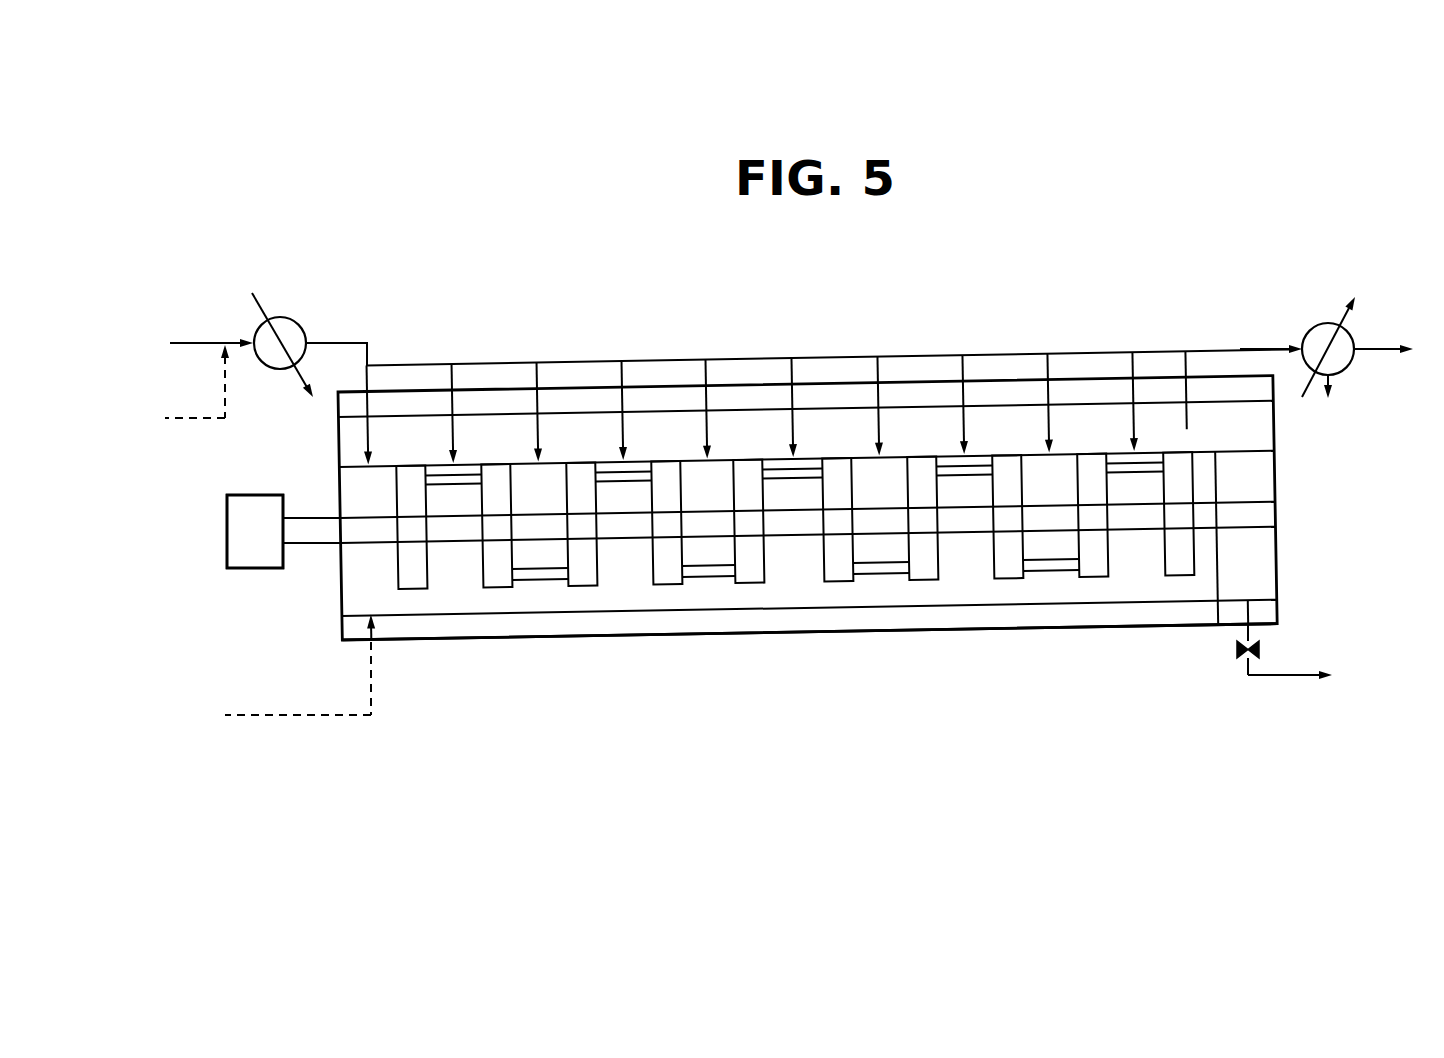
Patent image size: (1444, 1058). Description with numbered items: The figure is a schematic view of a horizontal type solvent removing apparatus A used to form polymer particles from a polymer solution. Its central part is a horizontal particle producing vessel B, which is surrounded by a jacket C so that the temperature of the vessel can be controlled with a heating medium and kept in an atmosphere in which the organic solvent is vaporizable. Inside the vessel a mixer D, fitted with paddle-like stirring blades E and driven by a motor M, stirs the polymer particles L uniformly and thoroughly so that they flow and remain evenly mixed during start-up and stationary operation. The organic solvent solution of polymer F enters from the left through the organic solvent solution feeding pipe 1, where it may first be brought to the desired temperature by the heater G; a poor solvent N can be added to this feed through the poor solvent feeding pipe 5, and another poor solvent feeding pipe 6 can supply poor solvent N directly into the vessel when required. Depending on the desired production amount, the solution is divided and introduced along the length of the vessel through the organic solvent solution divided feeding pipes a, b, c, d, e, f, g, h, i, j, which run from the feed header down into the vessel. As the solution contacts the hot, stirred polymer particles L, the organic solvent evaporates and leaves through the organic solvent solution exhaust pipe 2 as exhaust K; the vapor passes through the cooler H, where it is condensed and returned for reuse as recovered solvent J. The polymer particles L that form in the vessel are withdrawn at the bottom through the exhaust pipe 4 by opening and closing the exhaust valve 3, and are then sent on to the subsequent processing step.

The organic solvent solution feeding pipe 1 is at (197, 343).
The organic solvent solution exhaust pipe 2 is at (1242, 350).
The exhaust valve 3 is at (1236, 650).
The exhaust pipe 4 is at (1276, 678).
The poor solvent feeding pipe 5 is at (200, 420).
The poor solvent feeding pipe 6 is at (288, 716).
The solvent removing apparatus A is at (841, 509).
The particle producing vessel B is at (1276, 548).
The jacket C is at (510, 641).
The mixer D is at (255, 570).
The blade of the mixer E is at (411, 590).
The organic solvent solution of polymer F is at (194, 344).
The heater G is at (282, 338).
The cooler H is at (1328, 338).
The recovered solvent J is at (1327, 409).
The exhaust K is at (1397, 350).
The polymer particles L is at (1302, 677).
The motor of the mixer M is at (255, 531).
The poor solvent N is at (253, 544).
The organic solvent solution divided feeding pipe a is at (378, 397).
The organic solvent solution divided feeding pipe b is at (457, 396).
The organic solvent solution divided feeding pipe c is at (541, 394).
The organic solvent solution divided feeding pipe d is at (627, 393).
The organic solvent solution divided feeding pipe e is at (711, 391).
The organic solvent solution divided feeding pipe f is at (795, 390).
The organic solvent solution divided feeding pipe g is at (883, 388).
The organic solvent solution divided feeding pipe h is at (968, 387).
The organic solvent solution divided feeding pipe i is at (1052, 385).
The organic solvent solution divided feeding pipe j is at (1136, 384).